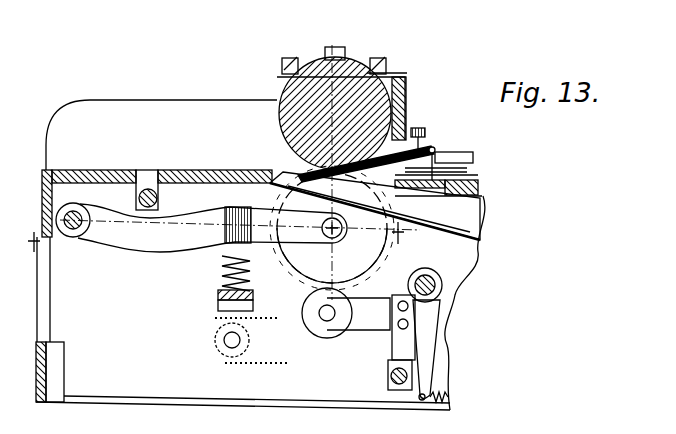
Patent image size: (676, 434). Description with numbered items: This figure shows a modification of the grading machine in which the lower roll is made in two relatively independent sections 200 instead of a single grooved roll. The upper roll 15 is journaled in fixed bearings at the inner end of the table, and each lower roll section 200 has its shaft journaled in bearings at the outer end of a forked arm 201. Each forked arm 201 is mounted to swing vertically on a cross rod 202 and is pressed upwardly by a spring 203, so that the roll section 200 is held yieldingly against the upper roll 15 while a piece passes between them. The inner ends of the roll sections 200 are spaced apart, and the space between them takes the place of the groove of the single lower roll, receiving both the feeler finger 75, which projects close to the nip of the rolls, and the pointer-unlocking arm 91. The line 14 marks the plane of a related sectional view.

The section line 14— 14 is at (218, 237).
The upper roll 15 is at (339, 50).
The finger 75 is at (395, 199).
The outer feeler arm 91 is at (322, 228).
The lower roll section 200 is at (388, 260).
The forked arm 201 is at (183, 249).
The cross rod 202 is at (82, 242).
The spring 203 is at (250, 285).